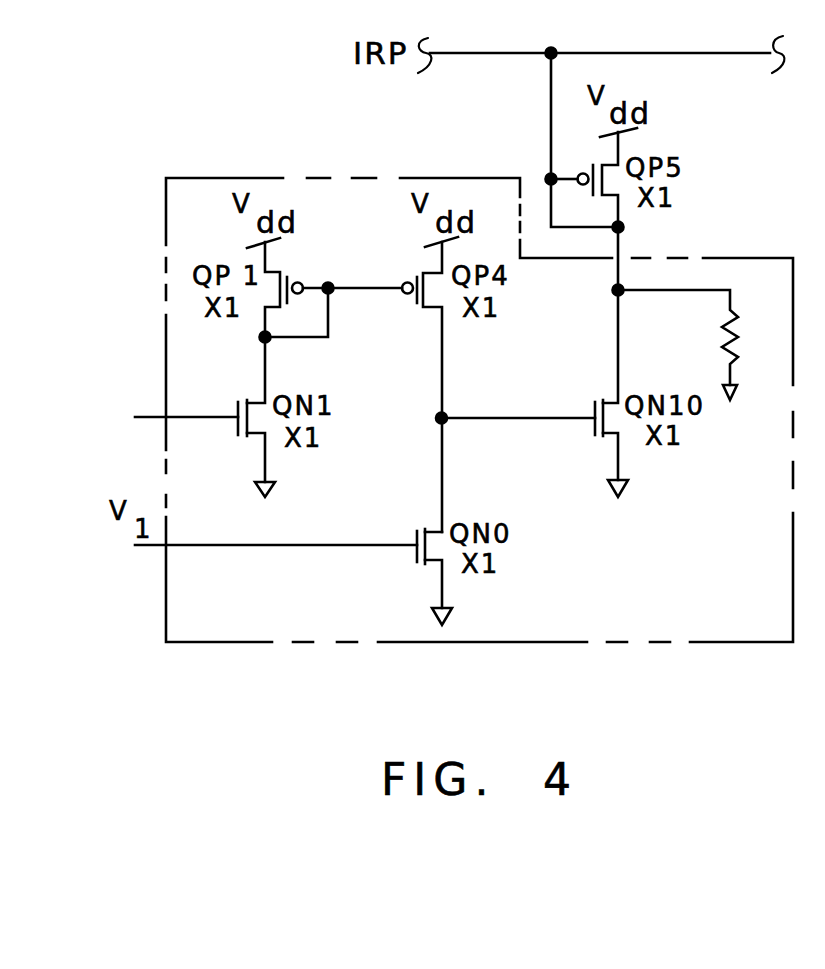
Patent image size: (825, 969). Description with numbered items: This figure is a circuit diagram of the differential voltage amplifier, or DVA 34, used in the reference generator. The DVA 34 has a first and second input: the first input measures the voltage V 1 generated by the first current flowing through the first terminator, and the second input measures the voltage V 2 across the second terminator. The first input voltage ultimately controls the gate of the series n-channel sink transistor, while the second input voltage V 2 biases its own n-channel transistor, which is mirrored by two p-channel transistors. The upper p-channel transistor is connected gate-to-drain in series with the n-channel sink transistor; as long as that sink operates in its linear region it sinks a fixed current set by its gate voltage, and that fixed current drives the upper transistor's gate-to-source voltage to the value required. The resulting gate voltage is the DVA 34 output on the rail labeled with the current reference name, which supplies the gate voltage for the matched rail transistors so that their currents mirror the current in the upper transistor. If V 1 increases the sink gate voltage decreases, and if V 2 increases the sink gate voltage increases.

The differential voltage amplifier 34 is at (768, 258).
The resistor R1 1 is at (704, 345).
The input V2 2 is at (173, 392).